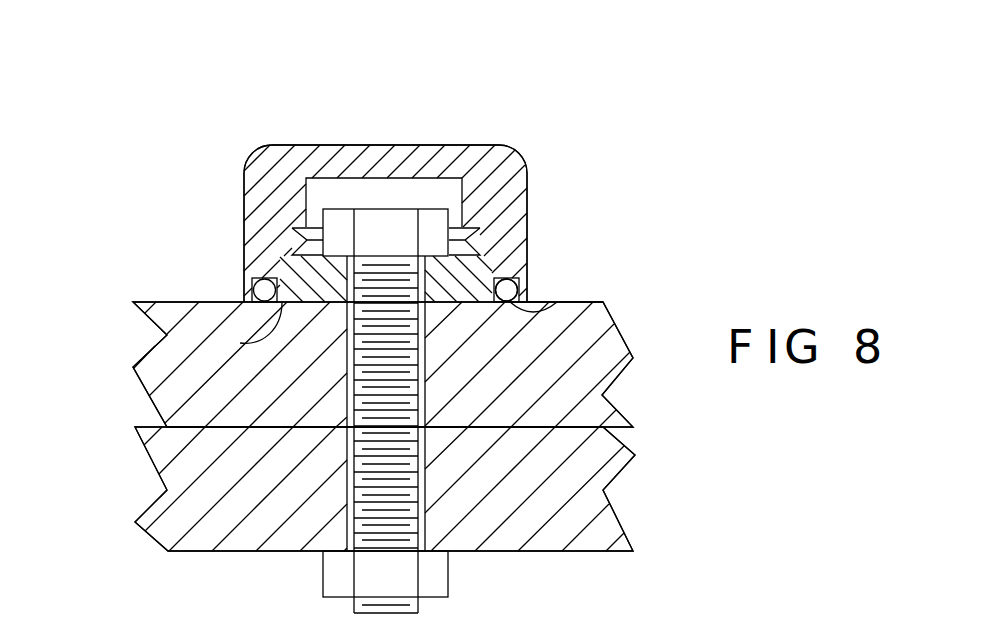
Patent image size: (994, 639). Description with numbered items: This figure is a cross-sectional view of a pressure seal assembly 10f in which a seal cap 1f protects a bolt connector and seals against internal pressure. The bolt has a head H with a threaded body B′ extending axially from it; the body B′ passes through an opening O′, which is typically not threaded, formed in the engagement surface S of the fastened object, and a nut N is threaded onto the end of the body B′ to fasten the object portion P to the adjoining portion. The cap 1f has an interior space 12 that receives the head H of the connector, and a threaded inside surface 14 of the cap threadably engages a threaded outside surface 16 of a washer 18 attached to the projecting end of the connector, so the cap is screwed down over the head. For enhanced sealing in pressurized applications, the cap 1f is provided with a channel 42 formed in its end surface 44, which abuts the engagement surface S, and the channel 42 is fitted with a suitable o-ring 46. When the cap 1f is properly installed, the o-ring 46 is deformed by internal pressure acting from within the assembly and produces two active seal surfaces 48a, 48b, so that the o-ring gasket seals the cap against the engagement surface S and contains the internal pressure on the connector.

The pressure seal assembly 10f is at (592, 75).
The cap 1f is at (373, 153).
The interior space 12 is at (380, 192).
The head H is at (380, 237).
The washer 18 is at (305, 250).
The threaded inside surface 14 is at (481, 227).
The threaded outside surface 16 is at (320, 262).
The channel 42 is at (481, 254).
The o-ring 46 is at (528, 282).
The engagement surface S is at (258, 292).
The active seal surface 48a is at (507, 289).
The active seal surface 48b is at (573, 301).
The end surface 44 is at (240, 343).
The object portion P is at (587, 333).
The opening O′ is at (423, 388).
The threaded body B′ is at (383, 382).
The nut N is at (340, 575).